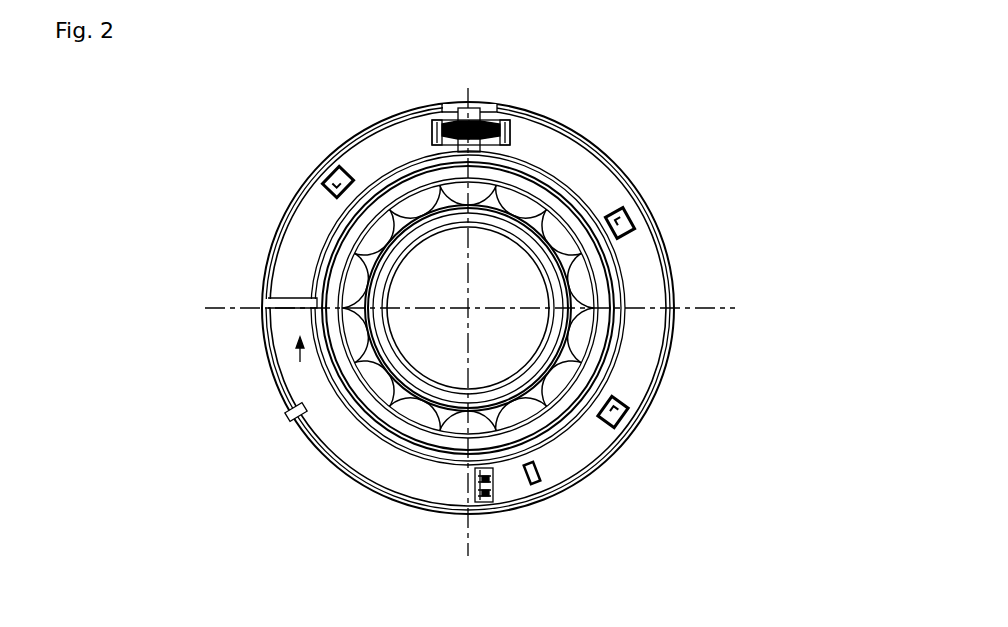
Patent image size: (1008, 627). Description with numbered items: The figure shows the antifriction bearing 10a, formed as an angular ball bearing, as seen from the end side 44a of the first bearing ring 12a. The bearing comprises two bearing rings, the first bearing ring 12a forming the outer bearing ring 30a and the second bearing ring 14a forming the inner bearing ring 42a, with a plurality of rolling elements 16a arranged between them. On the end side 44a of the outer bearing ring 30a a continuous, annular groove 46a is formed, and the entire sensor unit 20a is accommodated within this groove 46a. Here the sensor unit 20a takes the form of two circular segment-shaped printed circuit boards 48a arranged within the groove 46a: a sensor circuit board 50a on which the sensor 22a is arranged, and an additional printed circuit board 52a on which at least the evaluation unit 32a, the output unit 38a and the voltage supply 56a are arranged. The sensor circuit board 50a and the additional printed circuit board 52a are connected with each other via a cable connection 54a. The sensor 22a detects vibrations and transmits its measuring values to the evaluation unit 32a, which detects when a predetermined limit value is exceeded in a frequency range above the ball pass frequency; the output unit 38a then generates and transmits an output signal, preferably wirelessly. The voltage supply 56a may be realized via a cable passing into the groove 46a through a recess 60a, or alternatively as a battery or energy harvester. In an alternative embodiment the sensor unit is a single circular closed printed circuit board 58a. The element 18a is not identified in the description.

The bearing assembly 10a is at (780, 168).
The outer ring 12a is at (592, 150).
The inner ring 14a is at (412, 382).
The rolling elements 16a is at (580, 328).
The bore 18a is at (600, 293).
The housing 20a is at (310, 222).
The sensor 22a is at (318, 170).
The outer ring surface 30a is at (468, 308).
The sensor 32a is at (640, 220).
The sensor 38a is at (642, 428).
The inner raceway 42a is at (468, 308).
The slot 44a is at (286, 354).
The gap 46a is at (340, 428).
The clip 48a is at (402, 138).
The spring element 50a is at (455, 130).
The spring element 52a is at (535, 130).
The pin 54a is at (473, 98).
The marker 56a is at (508, 482).
The electronics module 58a is at (476, 494).
The notch 60a is at (286, 410).